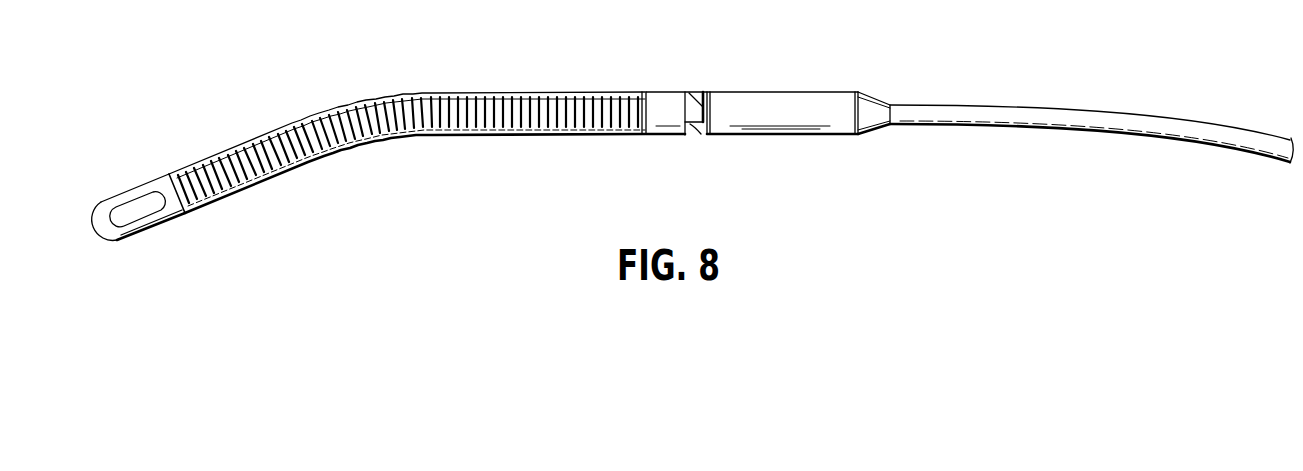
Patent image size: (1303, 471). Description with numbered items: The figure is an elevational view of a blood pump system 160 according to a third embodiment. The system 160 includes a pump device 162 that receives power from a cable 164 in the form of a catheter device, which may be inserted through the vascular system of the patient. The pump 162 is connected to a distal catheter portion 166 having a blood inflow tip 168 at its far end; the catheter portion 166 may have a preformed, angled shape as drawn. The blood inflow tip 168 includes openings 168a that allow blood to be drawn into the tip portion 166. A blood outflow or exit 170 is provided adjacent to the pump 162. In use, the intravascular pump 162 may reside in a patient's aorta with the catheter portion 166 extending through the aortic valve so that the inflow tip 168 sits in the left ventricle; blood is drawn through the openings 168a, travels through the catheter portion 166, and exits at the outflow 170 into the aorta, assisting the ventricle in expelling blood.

The blood pump system 160 is at (824, 39).
The pump device 162 is at (746, 91).
The cable 164 is at (947, 103).
The distal catheter portion 166 is at (463, 92).
The blood inflow tip 168 is at (91, 217).
The openings 168a is at (150, 208).
The blood outflow openings 170 is at (692, 136).